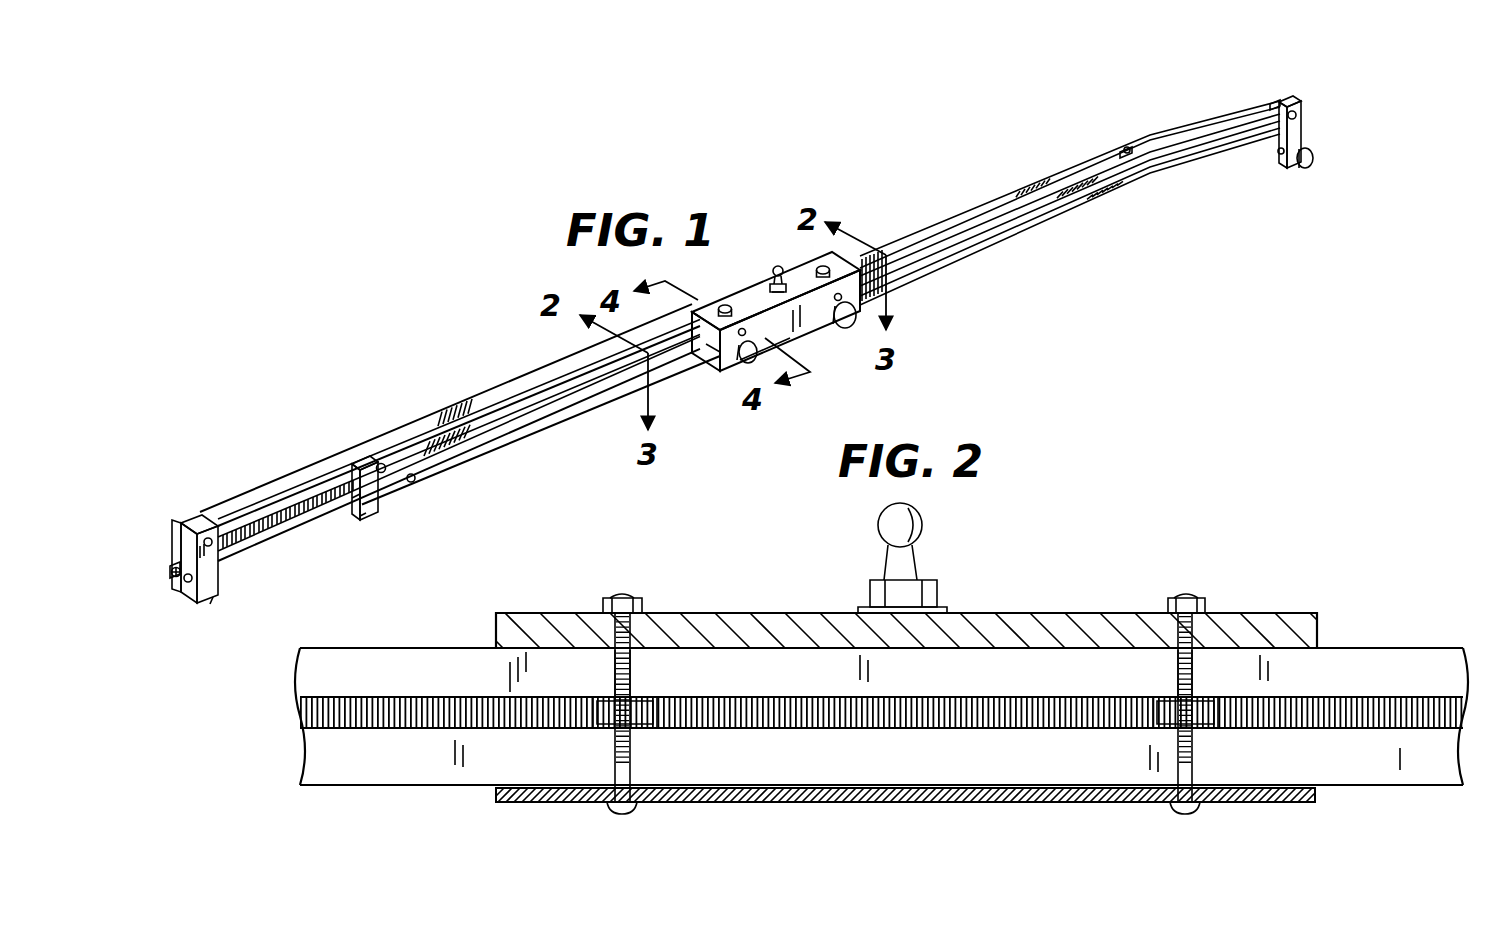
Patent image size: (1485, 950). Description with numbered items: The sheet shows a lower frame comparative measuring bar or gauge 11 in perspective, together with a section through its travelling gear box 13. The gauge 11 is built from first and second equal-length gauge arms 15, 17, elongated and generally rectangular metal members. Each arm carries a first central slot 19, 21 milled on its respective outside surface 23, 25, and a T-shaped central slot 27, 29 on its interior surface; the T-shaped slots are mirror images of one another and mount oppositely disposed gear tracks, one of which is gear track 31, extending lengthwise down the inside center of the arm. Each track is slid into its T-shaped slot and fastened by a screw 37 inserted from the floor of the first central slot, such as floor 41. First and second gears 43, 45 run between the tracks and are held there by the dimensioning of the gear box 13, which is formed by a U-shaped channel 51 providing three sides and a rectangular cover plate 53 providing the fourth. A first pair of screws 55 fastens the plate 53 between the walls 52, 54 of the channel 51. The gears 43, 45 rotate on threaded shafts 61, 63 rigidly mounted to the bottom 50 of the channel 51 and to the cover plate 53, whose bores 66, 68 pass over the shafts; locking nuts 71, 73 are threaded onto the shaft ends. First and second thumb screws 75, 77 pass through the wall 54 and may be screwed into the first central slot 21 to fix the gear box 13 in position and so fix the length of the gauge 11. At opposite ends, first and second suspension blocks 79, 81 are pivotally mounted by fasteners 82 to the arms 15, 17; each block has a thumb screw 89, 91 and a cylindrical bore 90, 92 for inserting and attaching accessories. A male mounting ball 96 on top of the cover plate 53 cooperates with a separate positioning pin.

In FIG. 1, the comparative measuring bar 11 is at (884, 202).
In FIG. 1, the travelling gear box 13 is at (829, 336).
In FIG. 2, the travelling gear box 13 is at (1293, 611).
In FIG. 1, the first gauge arm 15 is at (340, 466).
In FIG. 2, the first gauge arm 15 is at (1360, 652).
In FIG. 1, the second gauge arm 17 is at (448, 480).
In FIG. 1, the first central slot 19 is at (178, 545).
In FIG. 1, the first central slot 21 is at (381, 506).
In FIG. 1, the outside surface 23 is at (184, 528).
In FIG. 1, the outside surface 25 is at (372, 514).
In FIG. 1, the T-shaped central slot 27 is at (177, 576).
In FIG. 1, the T-shaped central slot 29 is at (355, 497).
In FIG. 1, the gear track 31 is at (243, 540).
In FIG. 2, the gear track 31 is at (1362, 722).
In FIG. 1, the screw 37 is at (412, 483).
In FIG. 1, the floor 41 is at (362, 512).
In FIG. 2, the first gear 43 is at (641, 702).
In FIG. 2, the second gear 45 is at (1196, 704).
In FIG. 2, the bottom 50 is at (866, 803).
In FIG. 1, the U-shaped channel 51 is at (786, 340).
In FIG. 2, the U-shaped channel 51 is at (1285, 806).
In FIG. 1, the wall 52 is at (693, 314).
In FIG. 1, the rectangular cover plate 53 is at (746, 300).
In FIG. 2, the rectangular cover plate 53 is at (1006, 612).
In FIG. 1, the wall 54 is at (718, 362).
In FIG. 1, the first pair of screws 55 is at (741, 328).
In FIG. 2, the shaft 61 is at (614, 670).
In FIG. 2, the shaft 63 is at (1178, 670).
In FIG. 2, the bore 66 is at (632, 632).
In FIG. 2, the bore 68 is at (1178, 640).
In FIG. 1, the locking nut 71 is at (718, 305).
In FIG. 2, the locking nut 71 is at (632, 596).
In FIG. 1, the locking nut 73 is at (822, 266).
In FIG. 2, the locking nut 73 is at (1196, 597).
In FIG. 1, the first thumb screw 75 is at (862, 313).
In FIG. 1, the second thumb screw 77 is at (745, 362).
In FIG. 1, the first suspension block 79 is at (240, 583).
In FIG. 1, the second suspension block 81 is at (1303, 133).
In FIG. 1, the fastener 82 is at (212, 537).
In FIG. 1, the thumb screw 89 is at (172, 568).
In FIG. 1, the cylindrical bore 90 is at (188, 583).
In FIG. 1, the thumb screw 91 is at (1250, 196).
In FIG. 1, the cylindrical bore 92 is at (1279, 155).
In FIG. 1, the male mounting ball 96 is at (776, 267).
In FIG. 2, the male mounting ball 96 is at (888, 534).